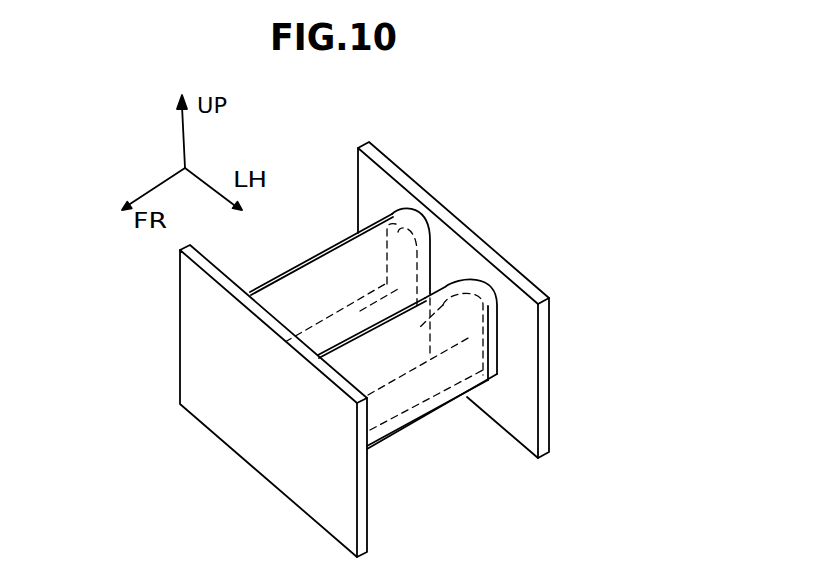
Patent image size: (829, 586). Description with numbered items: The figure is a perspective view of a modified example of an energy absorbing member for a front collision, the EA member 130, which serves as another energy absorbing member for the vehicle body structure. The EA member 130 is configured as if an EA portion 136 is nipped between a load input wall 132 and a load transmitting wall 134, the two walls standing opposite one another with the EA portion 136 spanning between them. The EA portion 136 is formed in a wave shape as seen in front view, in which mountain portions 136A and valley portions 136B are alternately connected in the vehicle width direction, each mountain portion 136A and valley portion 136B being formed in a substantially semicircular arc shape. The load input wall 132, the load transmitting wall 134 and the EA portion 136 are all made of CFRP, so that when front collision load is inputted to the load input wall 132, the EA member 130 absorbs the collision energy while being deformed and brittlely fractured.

The EA member for a front collision 130 is at (610, 218).
The load input wall 132 is at (237, 430).
The load transmitting wall 134 is at (548, 380).
The EA portion 136 is at (450, 456).
The mountain portions 136A is at (351, 358).
The valley portions 136B is at (445, 330).